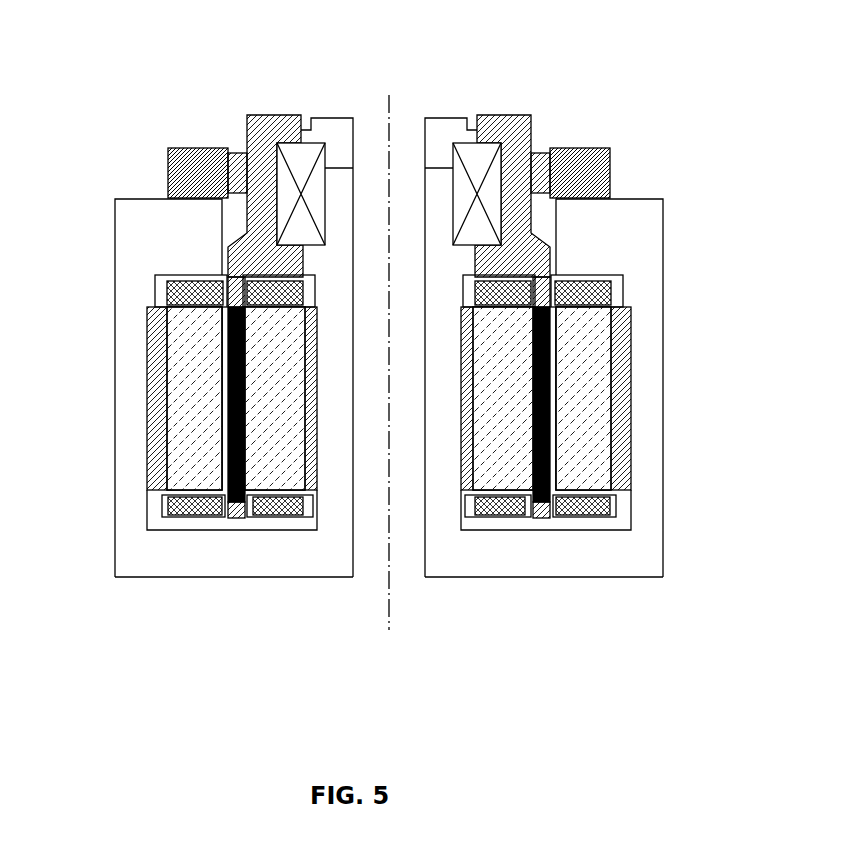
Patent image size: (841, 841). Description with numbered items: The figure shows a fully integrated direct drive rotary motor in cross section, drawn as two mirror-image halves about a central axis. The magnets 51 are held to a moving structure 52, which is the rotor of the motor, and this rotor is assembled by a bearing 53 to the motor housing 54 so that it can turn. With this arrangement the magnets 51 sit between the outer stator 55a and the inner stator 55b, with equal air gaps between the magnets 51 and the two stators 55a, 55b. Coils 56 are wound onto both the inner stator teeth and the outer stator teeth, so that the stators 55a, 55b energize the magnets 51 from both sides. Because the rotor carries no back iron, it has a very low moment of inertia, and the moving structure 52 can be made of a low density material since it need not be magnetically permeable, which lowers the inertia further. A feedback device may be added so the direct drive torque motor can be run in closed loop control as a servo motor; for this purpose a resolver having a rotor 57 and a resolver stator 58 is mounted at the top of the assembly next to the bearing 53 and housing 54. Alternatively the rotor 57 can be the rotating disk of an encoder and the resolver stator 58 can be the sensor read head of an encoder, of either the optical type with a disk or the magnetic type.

The magnets 51 is at (228, 505).
The moving structure 52 is at (263, 257).
The bearing 53 is at (290, 187).
The motor housing 54 is at (137, 555).
The outer stator 55a is at (592, 345).
The inner stator 55b is at (483, 475).
The coils 56 is at (223, 275).
The resolver rotor 57 is at (540, 153).
The resolver stator 58 is at (605, 168).